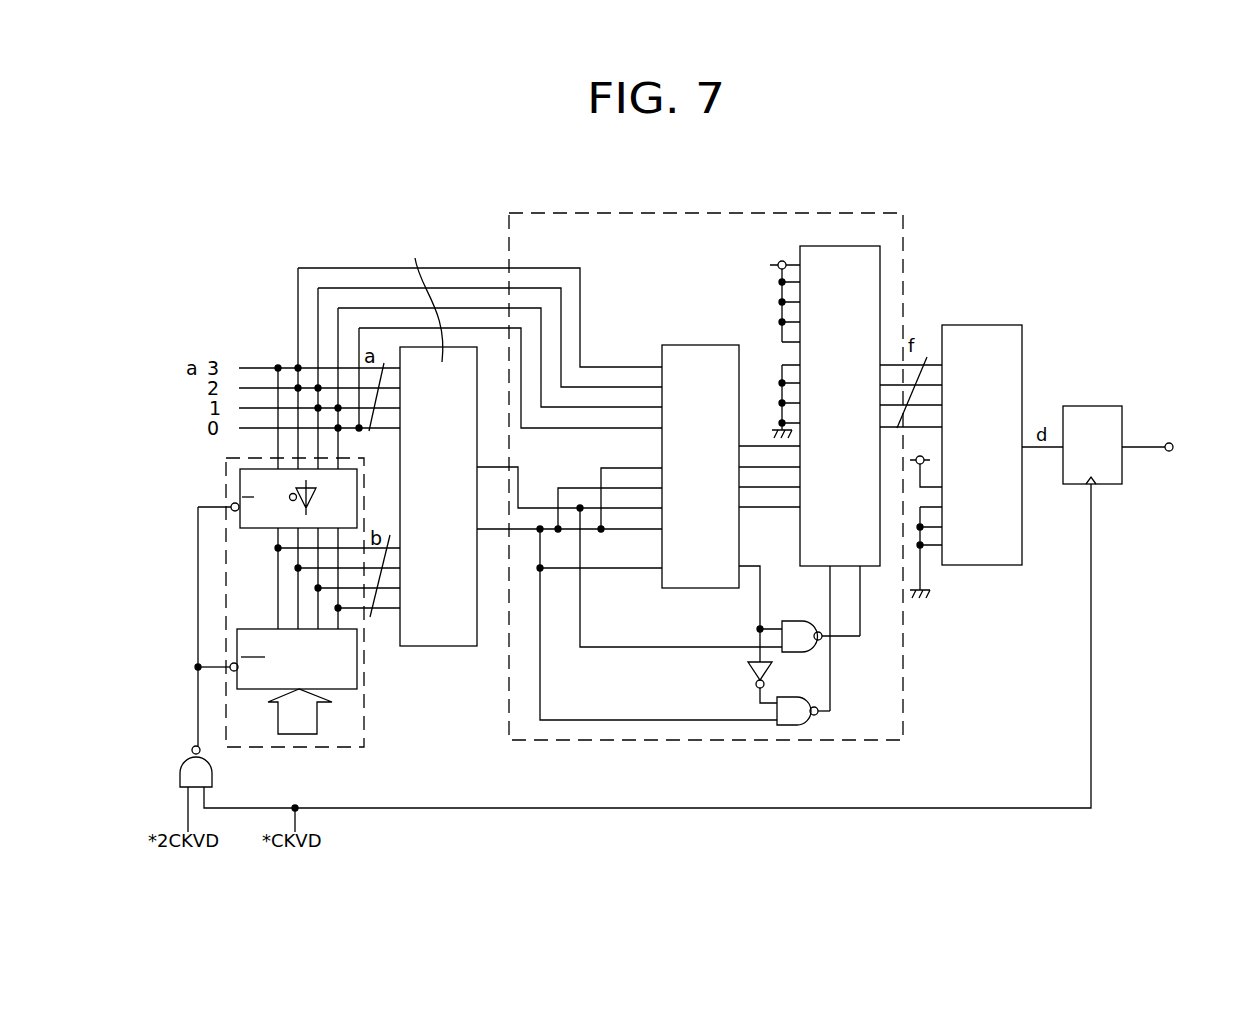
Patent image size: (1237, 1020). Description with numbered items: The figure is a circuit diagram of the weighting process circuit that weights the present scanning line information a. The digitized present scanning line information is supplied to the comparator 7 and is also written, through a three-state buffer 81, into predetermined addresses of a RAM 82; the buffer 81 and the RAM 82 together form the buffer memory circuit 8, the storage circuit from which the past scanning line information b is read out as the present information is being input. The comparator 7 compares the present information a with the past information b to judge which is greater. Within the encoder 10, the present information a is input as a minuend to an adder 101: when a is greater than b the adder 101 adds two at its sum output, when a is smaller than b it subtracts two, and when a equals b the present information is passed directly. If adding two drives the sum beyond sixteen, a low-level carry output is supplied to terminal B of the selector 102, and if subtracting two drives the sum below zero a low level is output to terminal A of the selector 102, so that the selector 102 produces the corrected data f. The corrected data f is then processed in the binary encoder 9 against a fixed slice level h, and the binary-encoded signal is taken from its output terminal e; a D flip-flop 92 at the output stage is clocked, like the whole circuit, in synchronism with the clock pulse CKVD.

The comparator 7 is at (470, 647).
The buffer memory circuit 8 is at (296, 621).
The three-state buffer 81 is at (250, 483).
The RAM 82 is at (240, 646).
The binary encoder 9 is at (1017, 348).
The encoder 10 is at (778, 477).
The adder 101 is at (715, 347).
The selector 102 is at (803, 247).
The D flip-flop 92 is at (1112, 472).